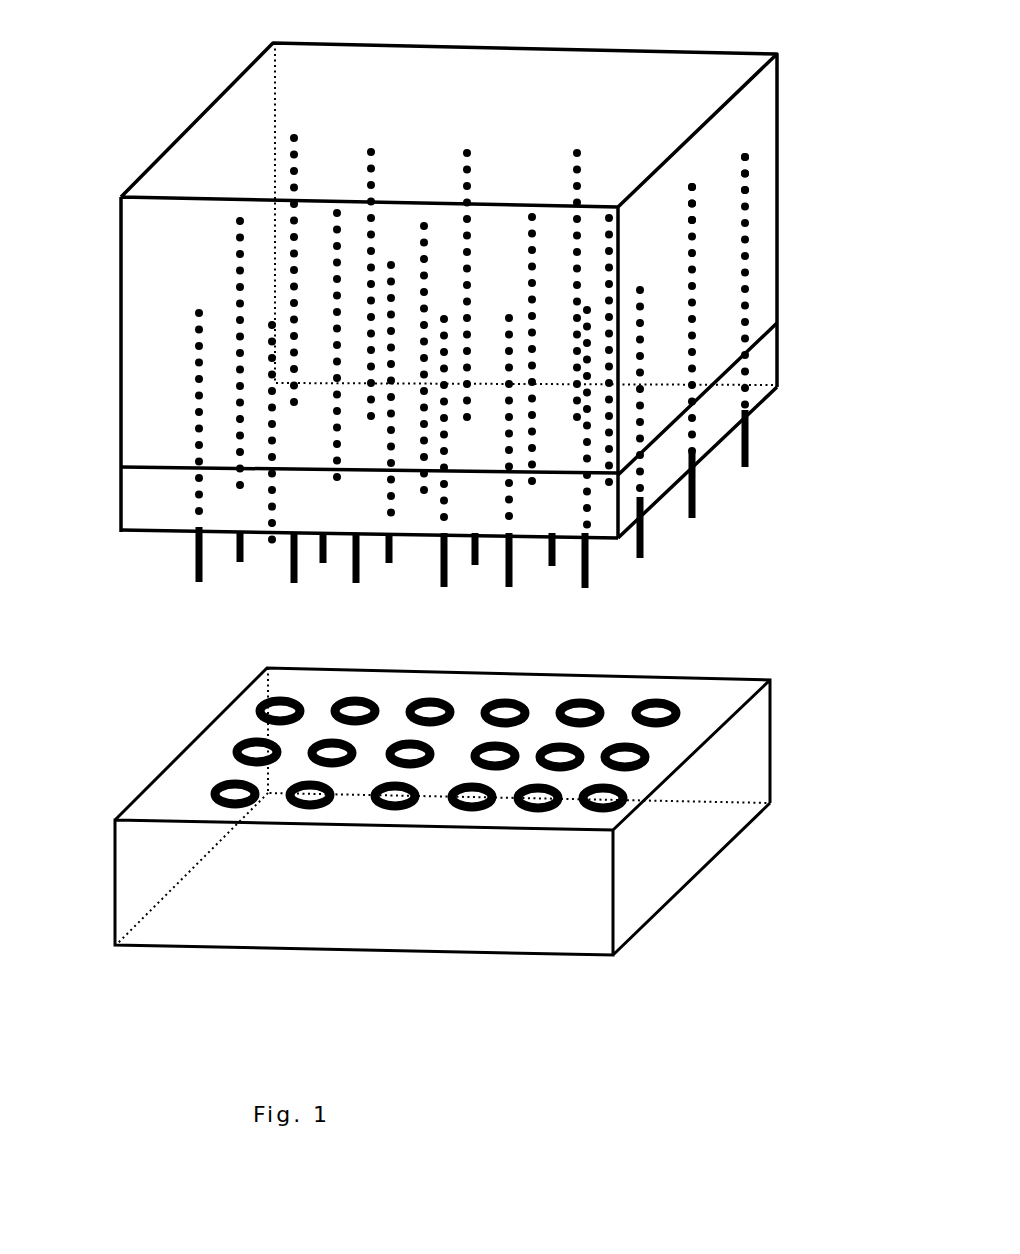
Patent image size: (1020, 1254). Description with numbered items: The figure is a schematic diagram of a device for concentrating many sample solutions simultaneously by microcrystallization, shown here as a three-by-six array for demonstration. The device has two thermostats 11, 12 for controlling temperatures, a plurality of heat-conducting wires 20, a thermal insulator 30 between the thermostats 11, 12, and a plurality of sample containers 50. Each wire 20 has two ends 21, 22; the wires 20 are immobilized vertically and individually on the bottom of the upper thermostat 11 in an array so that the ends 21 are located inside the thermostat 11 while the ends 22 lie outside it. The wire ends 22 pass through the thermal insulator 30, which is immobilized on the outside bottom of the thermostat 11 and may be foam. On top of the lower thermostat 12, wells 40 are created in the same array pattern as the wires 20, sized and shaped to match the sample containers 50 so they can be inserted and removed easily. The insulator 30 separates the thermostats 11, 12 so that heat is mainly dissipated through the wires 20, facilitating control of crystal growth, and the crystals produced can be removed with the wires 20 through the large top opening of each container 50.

The thermostat 11 is at (153, 157).
The thermostat 12 is at (128, 852).
The wires 20 is at (690, 365).
The wire ends 21 is at (702, 220).
The wire ends 22 is at (365, 585).
The thermal insulator 30 is at (137, 510).
The wells 40 is at (473, 745).
The sample containers 50 is at (394, 719).